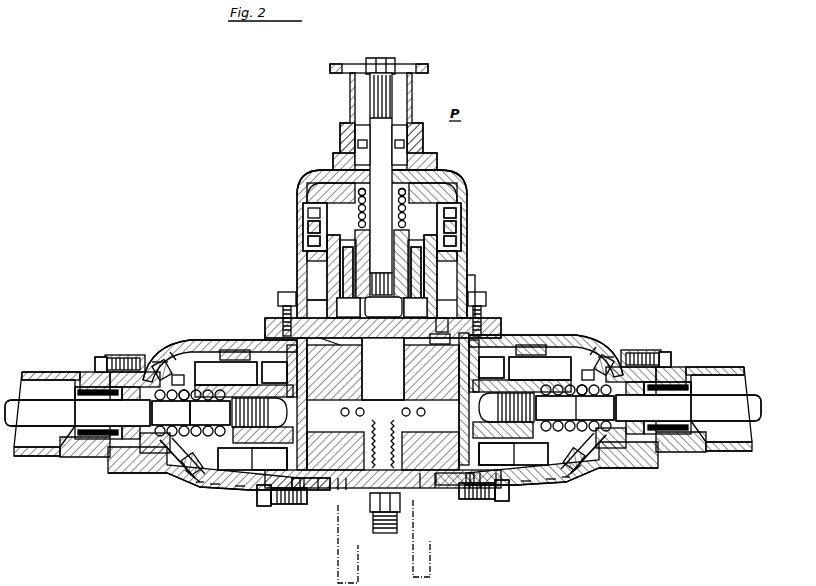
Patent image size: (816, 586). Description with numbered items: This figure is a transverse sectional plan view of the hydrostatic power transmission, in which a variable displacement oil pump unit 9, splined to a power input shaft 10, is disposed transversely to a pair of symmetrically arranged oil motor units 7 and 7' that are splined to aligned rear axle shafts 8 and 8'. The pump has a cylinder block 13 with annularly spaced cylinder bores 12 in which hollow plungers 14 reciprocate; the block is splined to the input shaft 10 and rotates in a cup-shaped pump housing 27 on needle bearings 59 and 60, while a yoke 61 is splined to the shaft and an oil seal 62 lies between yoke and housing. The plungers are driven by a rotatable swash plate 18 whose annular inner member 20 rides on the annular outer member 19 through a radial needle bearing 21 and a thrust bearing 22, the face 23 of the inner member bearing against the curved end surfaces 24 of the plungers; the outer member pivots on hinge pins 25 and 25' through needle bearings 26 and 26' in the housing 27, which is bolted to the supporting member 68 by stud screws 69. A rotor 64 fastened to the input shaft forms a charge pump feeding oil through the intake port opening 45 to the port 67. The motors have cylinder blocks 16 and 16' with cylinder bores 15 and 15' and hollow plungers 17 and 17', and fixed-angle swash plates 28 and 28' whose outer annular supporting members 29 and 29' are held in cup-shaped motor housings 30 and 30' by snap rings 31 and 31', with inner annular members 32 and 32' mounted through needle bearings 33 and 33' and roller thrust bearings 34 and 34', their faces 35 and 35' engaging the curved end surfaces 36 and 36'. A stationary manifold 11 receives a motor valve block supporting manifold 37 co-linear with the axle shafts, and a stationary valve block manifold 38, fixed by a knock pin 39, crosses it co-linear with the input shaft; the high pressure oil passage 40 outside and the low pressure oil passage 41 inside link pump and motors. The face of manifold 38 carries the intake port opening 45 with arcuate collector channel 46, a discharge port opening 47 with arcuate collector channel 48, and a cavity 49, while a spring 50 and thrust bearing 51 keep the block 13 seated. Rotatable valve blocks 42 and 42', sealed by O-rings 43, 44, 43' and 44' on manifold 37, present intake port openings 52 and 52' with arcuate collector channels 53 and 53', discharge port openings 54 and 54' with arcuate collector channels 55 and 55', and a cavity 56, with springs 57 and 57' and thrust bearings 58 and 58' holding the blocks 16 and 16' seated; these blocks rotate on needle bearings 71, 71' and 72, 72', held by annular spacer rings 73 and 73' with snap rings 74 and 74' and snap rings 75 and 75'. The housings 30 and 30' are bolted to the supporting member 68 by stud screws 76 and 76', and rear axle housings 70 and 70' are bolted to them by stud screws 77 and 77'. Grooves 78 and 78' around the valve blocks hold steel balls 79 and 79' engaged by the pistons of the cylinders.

The yoke 61 is at (396, 66).
The oil seal 62 is at (412, 96).
The needle bearing 60 is at (424, 112).
The spring 50 is at (438, 158).
The radial needle bearing 21 is at (447, 156).
The thrust bearing 22 is at (462, 182).
The power input shaft 10 is at (376, 128).
The rotor 64 is at (358, 140).
The thrust bearing 51 is at (338, 160).
The rotatable swash plate 18 is at (345, 200).
The annular outer member 19 is at (330, 215).
The hinge pin 25 is at (282, 224).
The curved end surface 24 is at (312, 230).
The needle bearing 26 is at (282, 253).
The hinge pin 25' is at (473, 215).
The annular inner member 20 is at (460, 222).
The face 23 is at (460, 238).
The needle bearing 26' is at (483, 249).
The cup-shaped pump housing 27 is at (476, 286).
The stud screws 69 is at (279, 296).
The supporting member 68 is at (487, 305).
The stationary manifold 11 is at (500, 326).
The hollow plungers 14 is at (421, 265).
The cylinder block 13 is at (422, 290).
The knock pin 39 is at (322, 330).
The cavity 49 is at (383, 295).
The cylinder bores 12 is at (415, 307).
The intake port opening 45 is at (348, 307).
The needle bearing 59 is at (440, 324).
The motor valve block supporting manifold 37 is at (440, 340).
The needle bearing 71 is at (366, 329).
The needle bearing 71' is at (427, 320).
The arcuate collector channel 53 is at (335, 384).
The arcuate collector channel 55 is at (335, 445).
The arcuate collector channel 53' is at (431, 382).
The arcuate collector channel 55' is at (434, 445).
The arcuate collector channel 46 is at (383, 369).
The discharge port opening 47 is at (374, 369).
The arcuate collector channel 48 is at (389, 369).
The stationary valve block manifold 38 is at (383, 391).
The low pressure oil passage 41 is at (383, 439).
The steel balls 79 is at (341, 417).
The groove 78 is at (360, 417).
The groove 78' is at (407, 417).
The steel balls 79' is at (425, 417).
The high pressure oil passage 40 is at (338, 342).
The port 67 is at (390, 534).
The stud screws 76 is at (277, 508).
The stud screws 76' is at (502, 497).
The annular spacer ring 73 is at (300, 513).
The snap ring 74 is at (297, 506).
The snap ring 75 is at (320, 499).
The O-ring 43 is at (340, 499).
The O-ring 44 is at (331, 509).
The snap ring 75' is at (476, 499).
The snap ring 74' is at (491, 509).
The annular spacer ring 73' is at (519, 508).
The O-ring 43' is at (430, 497).
The O-ring 44' is at (449, 504).
The rear axle housing 70 is at (47, 395).
The rear axle shaft 8 is at (40, 445).
The needle bearing 72 is at (96, 372).
The stud screws 77 is at (92, 347).
The thrust bearing 58 is at (112, 413).
The spring 57 is at (171, 413).
The cavity 56 is at (210, 413).
The needle bearing 33 is at (137, 340).
The cup-shaped motor housing 30 is at (163, 346).
The face 35 is at (167, 328).
The curved end surface 36 is at (187, 353).
The cylinder block 16 is at (243, 321).
The cylinder bores 15 is at (226, 373).
The intake port opening 52 is at (274, 372).
The discharge port opening 54 is at (252, 459).
The rotatable valve block 42 is at (269, 459).
The fixed-angle swash plate 28 is at (202, 486).
The outer annular supporting member 29 is at (169, 472).
The roller thrust bearing 34 is at (187, 493).
The snap ring 31 is at (205, 508).
The inner annular member 32 is at (219, 498).
The hollow plungers 17 is at (244, 497).
The rear axle housing 70' is at (727, 391).
The rear axle shaft 8' is at (726, 435).
The needle bearing 72' is at (681, 366).
The stud screws 77' is at (683, 341).
The thrust bearing 58' is at (653, 408).
The spring 57' is at (575, 408).
The needle bearing 33' is at (640, 336).
The cup-shaped motor housing 30' is at (616, 342).
The face 35' is at (611, 326).
The curved end surface 36' is at (590, 350).
The cylinder block 16' is at (522, 328).
The cylinder bores 15' is at (540, 368).
The intake port opening 52' is at (491, 367).
The discharge port opening 54' is at (515, 454).
The rotatable valve block 42' is at (501, 454).
The fixed-angle swash plate 28' is at (574, 480).
The outer annular supporting member 29' is at (609, 465).
The roller thrust bearing 34' is at (606, 492).
The snap ring 31' is at (592, 495).
The inner annular member 32' is at (572, 498).
The hollow plungers 17' is at (555, 512).
The variable displacement oil pump unit 9 is at (240, 151).
The oil motor unit 7 is at (231, 554).
The oil motor unit 7' is at (606, 544).